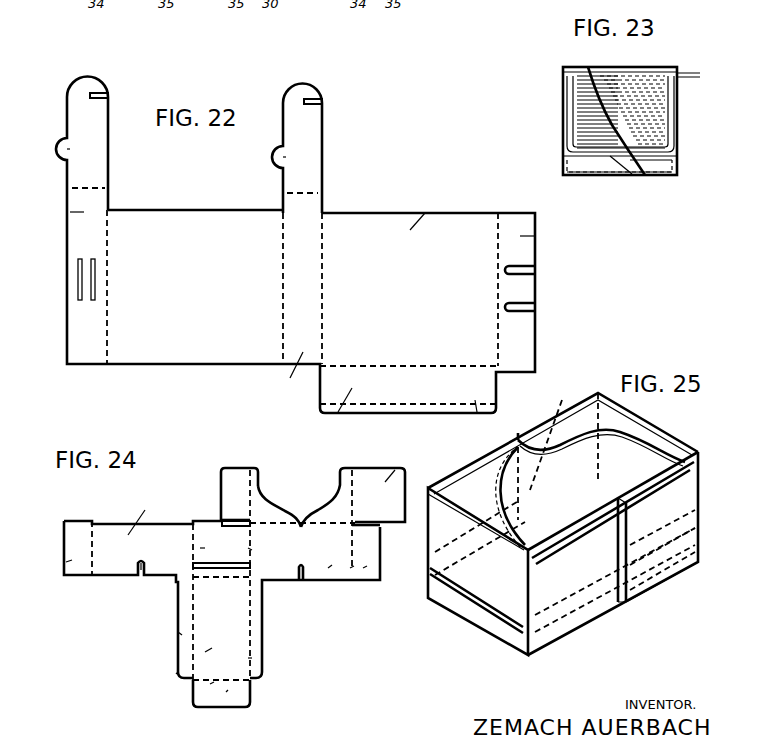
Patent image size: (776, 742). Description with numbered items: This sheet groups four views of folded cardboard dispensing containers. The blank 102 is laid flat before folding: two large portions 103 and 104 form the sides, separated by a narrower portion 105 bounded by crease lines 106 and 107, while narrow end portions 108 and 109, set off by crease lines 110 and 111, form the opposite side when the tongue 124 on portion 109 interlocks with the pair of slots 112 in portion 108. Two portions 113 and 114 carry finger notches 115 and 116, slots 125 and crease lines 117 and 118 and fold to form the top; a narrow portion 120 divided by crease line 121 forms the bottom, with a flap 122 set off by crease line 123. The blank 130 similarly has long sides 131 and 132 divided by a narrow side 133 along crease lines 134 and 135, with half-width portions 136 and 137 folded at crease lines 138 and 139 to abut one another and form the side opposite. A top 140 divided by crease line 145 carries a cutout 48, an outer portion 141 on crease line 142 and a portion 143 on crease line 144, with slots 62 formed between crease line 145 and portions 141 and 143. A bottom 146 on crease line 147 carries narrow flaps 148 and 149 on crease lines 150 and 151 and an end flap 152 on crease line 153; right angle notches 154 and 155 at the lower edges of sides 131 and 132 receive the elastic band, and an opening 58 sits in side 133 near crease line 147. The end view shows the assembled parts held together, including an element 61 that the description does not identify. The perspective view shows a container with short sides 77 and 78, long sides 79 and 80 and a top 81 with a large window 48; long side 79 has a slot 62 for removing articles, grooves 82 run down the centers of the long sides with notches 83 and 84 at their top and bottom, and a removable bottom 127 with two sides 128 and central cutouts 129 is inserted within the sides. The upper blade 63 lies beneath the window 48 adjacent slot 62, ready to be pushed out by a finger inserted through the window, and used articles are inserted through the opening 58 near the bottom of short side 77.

In FIG. 22, the blank 102 is at (52, 268).
In FIG. 22, the large portion 103 is at (200, 348).
In FIG. 22, the large portion 104 is at (423, 213).
In FIG. 22, the narrower portion 105 is at (287, 375).
In FIG. 22, the crease line 106 is at (283, 240).
In FIG. 22, the crease line 107 is at (322, 242).
In FIG. 22, the narrow portion 108 is at (84, 210).
In FIG. 22, the narrow portion 109 is at (520, 235).
In FIG. 22, the crease line 110 is at (500, 228).
In FIG. 22, the crease line 111 is at (106, 222).
In FIG. 22, the slots 112 is at (80, 282).
In FIG. 22, the portion 113 is at (84, 118).
In FIG. 22, the portion 114 is at (308, 128).
In FIG. 22, the finger notch 115 is at (70, 152).
In FIG. 22, the finger notch 116 is at (284, 152).
In FIG. 22, the crease line 117 is at (310, 193).
In FIG. 22, the crease line 118 is at (92, 189).
In FIG. 22, the narrow portion 120 is at (335, 408).
In FIG. 22, the crease line 121 is at (345, 368).
In FIG. 22, the flap 122 is at (472, 415).
In FIG. 22, the crease line 123 is at (435, 398).
In FIG. 22, the tongue 124 is at (535, 288).
In FIG. 22, the slots 125 is at (108, 96).
In FIG. 24, the blank 130 is at (85, 500).
In FIG. 23, the large portion 131 is at (680, 165).
In FIG. 24, the large portion 131 is at (330, 565).
In FIG. 23, the large portion 132 is at (565, 158).
In FIG. 24, the large portion 132 is at (143, 517).
In FIG. 24, the narrower portion 133 is at (210, 530).
In FIG. 24, the crease line 134 is at (193, 548).
In FIG. 24, the crease line 135 is at (250, 548).
In FIG. 24, the narrower portion 136 is at (365, 568).
In FIG. 24, the narrower portion 137 is at (72, 562).
In FIG. 24, the crease line 138 is at (350, 568).
In FIG. 24, the crease line 139 is at (92, 562).
In FIG. 23, the extending portion 140 is at (655, 66).
In FIG. 24, the extending portion 140 is at (335, 515).
In FIG. 24, the portion 141 is at (397, 466).
In FIG. 24, the crease line 142 is at (353, 472).
In FIG. 24, the portion 143 is at (232, 472).
In FIG. 24, the crease line 144 is at (250, 474).
In FIG. 24, the crease line 145 is at (262, 522).
In FIG. 23, the extending portion 146 is at (630, 173).
In FIG. 24, the extending portion 146 is at (178, 672).
In FIG. 24, the crease line 147 is at (200, 578).
In FIG. 24, the narrow flap 148 is at (182, 635).
In FIG. 23, the narrow flap 149 is at (565, 166).
In FIG. 24, the narrow flap 149 is at (250, 672).
In FIG. 24, the crease line 150 is at (212, 648).
In FIG. 24, the crease line 151 is at (245, 660).
In FIG. 24, the flap 152 is at (227, 690).
In FIG. 24, the crease line 153 is at (212, 682).
In FIG. 24, the right angle notch 154 is at (300, 575).
In FIG. 24, the right angle notch 155 is at (142, 575).
In FIG. 24, the window 48 is at (340, 510).
In FIG. 25, the window 48 is at (650, 445).
In FIG. 23, the opening 58 is at (676, 155).
In FIG. 24, the opening 58 is at (195, 565).
In FIG. 25, the opening 58 is at (470, 598).
In FIG. 23, the spring 61 is at (566, 140).
In FIG. 23, the slot 62 is at (683, 73).
In FIG. 24, the slot 62 is at (222, 522).
In FIG. 25, the slot 62 is at (698, 455).
In FIG. 23, the upper blade 63 is at (700, 75).
In FIG. 25, the short side 77 is at (515, 615).
In FIG. 25, the short side 78 is at (665, 503).
In FIG. 25, the long side 79 is at (545, 600).
In FIG. 25, the long side 80 is at (540, 475).
In FIG. 25, the top 81 is at (625, 422).
In FIG. 25, the grooves 82 is at (628, 582).
In FIG. 25, the notches 83 is at (632, 512).
In FIG. 23, the notches 84 is at (563, 88).
In FIG. 24, the notches 84 is at (302, 524).
In FIG. 25, the notches 84 is at (517, 440).
In FIG. 25, the bottom 127 is at (500, 612).
In FIG. 25, the sides 128 is at (460, 552).
In FIG. 25, the cutouts 129 is at (470, 525).